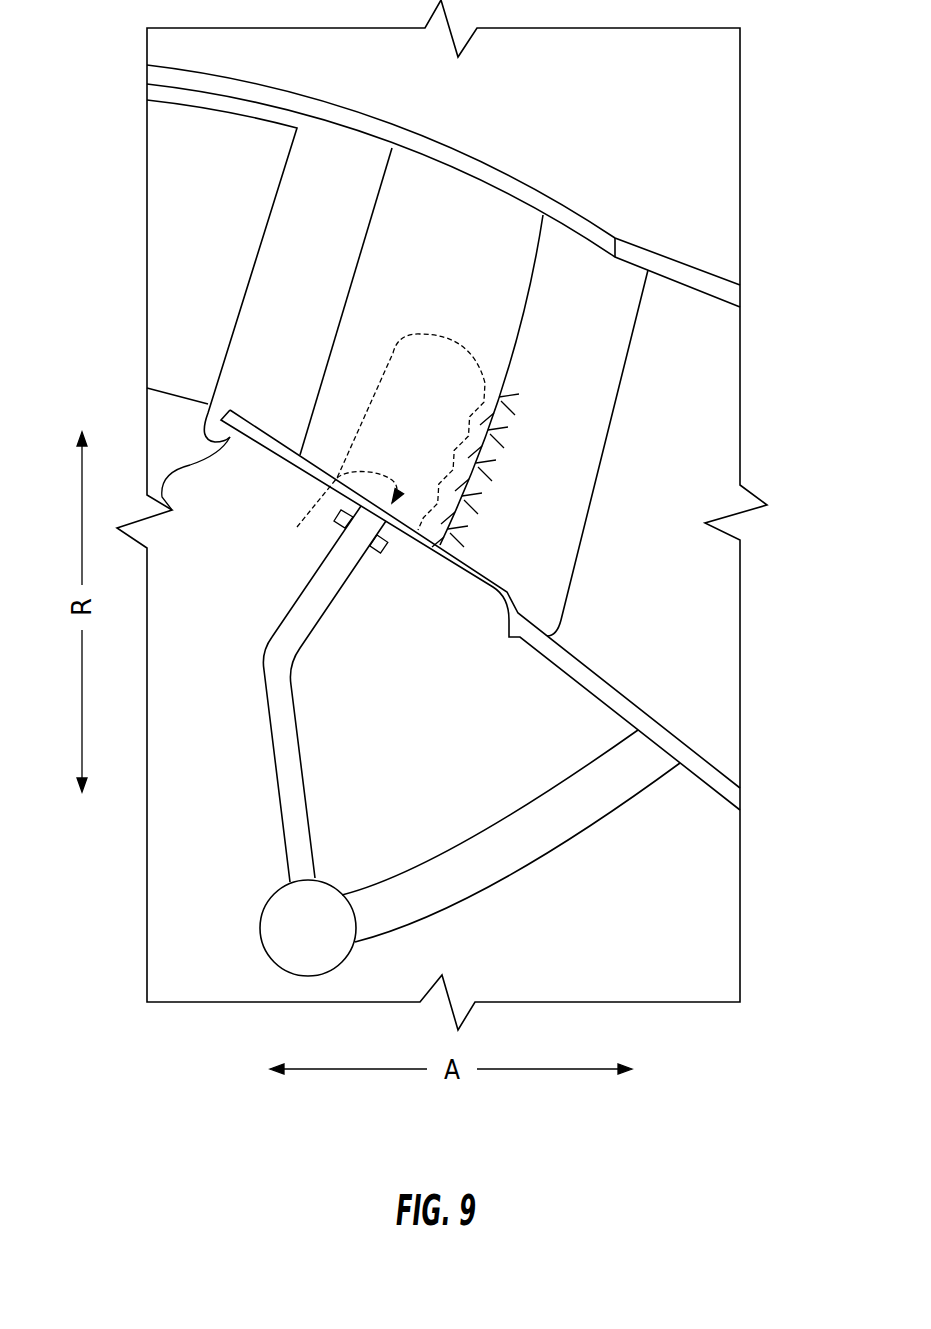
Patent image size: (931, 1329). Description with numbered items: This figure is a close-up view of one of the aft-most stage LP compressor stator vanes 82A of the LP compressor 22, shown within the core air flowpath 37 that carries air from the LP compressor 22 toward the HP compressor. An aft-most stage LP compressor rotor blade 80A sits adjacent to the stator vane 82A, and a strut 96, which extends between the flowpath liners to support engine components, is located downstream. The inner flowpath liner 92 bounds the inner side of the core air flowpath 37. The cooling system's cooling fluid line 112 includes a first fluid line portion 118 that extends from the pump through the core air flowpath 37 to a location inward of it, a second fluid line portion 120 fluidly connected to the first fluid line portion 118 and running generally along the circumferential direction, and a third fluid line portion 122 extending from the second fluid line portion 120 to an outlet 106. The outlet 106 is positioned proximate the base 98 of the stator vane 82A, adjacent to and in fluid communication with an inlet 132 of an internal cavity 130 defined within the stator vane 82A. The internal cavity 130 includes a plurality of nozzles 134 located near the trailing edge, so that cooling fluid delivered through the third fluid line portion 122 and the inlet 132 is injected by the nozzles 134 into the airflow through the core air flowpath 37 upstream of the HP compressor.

The LP compressor 22 is at (557, 135).
The core air flowpath 37 is at (692, 332).
The aft-most stage LP compressor rotor blade 80A is at (268, 157).
The aft-most stage LP compressor stator vane 82A is at (540, 268).
The inner flowpath liner 92 is at (577, 685).
The strut 96 is at (648, 478).
The base 98 is at (288, 463).
The outlet 106 is at (367, 528).
The cooling fluid line 112 is at (615, 850).
The first fluid line portion 118 is at (523, 873).
The second fluid line portion 120 is at (262, 935).
The third fluid line portion 122 is at (261, 703).
The internal cavity 130 is at (418, 372).
The inlet 132 is at (338, 518).
The nozzles 134 is at (487, 402).